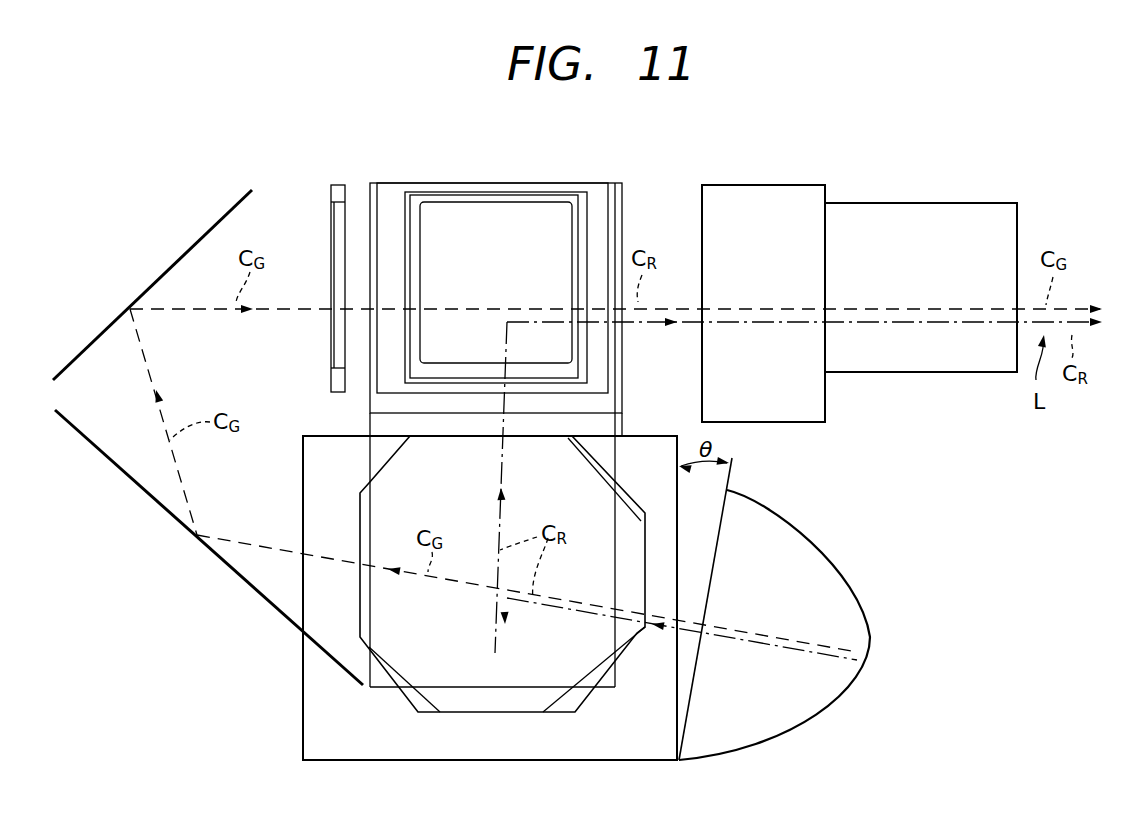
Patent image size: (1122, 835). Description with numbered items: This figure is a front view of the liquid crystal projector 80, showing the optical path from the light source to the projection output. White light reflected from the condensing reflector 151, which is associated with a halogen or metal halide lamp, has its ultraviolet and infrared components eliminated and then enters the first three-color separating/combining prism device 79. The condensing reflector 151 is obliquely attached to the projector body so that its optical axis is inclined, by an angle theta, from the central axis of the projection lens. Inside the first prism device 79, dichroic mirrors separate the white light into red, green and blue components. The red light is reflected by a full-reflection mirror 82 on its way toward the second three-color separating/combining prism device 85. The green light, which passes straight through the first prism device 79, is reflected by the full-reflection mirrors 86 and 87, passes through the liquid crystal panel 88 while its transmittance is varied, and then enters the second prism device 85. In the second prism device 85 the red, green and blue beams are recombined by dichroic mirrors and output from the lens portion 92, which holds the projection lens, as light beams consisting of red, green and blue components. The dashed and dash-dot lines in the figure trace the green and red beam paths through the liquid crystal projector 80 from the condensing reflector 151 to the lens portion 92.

The first three-color separating/combining prism device 79 is at (562, 713).
The liquid crystal projector 80 is at (258, 620).
The full-reflection mirror 82 is at (602, 762).
The second three-color separating/combining prism device 85 is at (447, 183).
The full-reflection mirror 86 is at (157, 502).
The full-reflection mirror 87 is at (228, 212).
The liquid crystal panel 88 is at (334, 190).
The lens portion 92 is at (947, 372).
The condensing reflector 151 is at (825, 710).